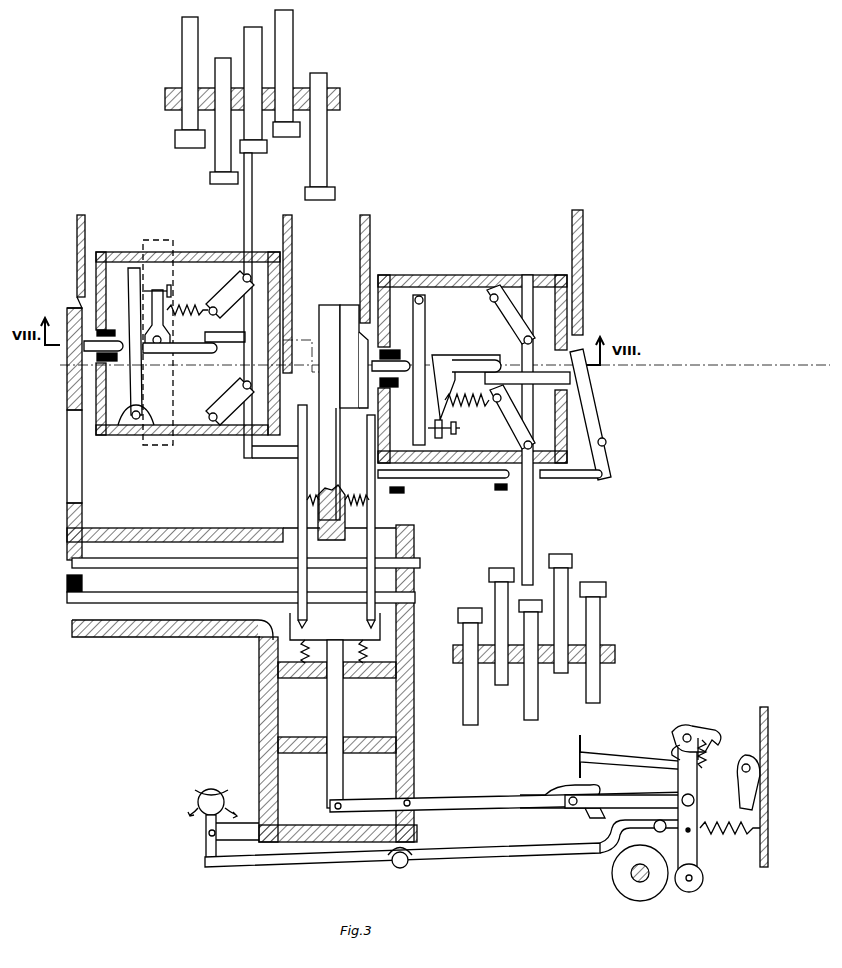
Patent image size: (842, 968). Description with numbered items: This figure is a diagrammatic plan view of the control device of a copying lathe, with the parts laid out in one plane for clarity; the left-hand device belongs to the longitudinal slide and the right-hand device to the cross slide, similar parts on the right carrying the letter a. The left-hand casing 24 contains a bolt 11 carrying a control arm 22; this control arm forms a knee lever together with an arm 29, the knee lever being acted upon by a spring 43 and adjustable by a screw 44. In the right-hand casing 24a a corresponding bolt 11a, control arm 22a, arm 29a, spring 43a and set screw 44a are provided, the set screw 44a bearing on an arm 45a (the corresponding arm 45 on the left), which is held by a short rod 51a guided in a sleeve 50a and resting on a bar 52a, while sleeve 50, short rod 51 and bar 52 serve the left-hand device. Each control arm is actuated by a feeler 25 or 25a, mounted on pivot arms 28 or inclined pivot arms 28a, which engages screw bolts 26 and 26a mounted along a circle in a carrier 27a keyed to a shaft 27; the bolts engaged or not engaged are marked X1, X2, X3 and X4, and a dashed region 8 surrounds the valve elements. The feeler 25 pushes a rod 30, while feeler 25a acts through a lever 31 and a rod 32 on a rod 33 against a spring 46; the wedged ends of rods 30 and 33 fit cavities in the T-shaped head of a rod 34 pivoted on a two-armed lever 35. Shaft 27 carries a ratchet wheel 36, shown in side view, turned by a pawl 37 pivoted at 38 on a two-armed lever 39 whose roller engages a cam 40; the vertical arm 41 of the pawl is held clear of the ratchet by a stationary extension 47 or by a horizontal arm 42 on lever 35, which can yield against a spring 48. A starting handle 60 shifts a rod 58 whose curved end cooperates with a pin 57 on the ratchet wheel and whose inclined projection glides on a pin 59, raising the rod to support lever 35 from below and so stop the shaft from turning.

The valve unit 8 is at (173, 402).
The bolt 11 is at (155, 345).
The pivot pin 11a is at (442, 360).
The control arm 22 is at (180, 350).
The control arm 22a is at (482, 358).
The casing 24 is at (118, 437).
The casing 24a is at (496, 277).
The feeler 25 is at (252, 210).
The feeler 25a is at (533, 490).
The screw bolts 26 is at (286, 130).
The stop pins 26a is at (560, 675).
The shaft 27 is at (696, 800).
The bolt carrier 27a is at (170, 100).
The pivot arms 28 is at (225, 298).
The inclined pivot arm 28a is at (510, 320).
The arm 29 is at (159, 285).
The arm 29a is at (445, 420).
The rod 30 is at (162, 566).
The lever 31 is at (604, 455).
The rod 32 is at (470, 481).
The rod 33 is at (212, 596).
The rod 34 is at (340, 720).
The two-armed lever 35 is at (492, 798).
The ratchet wheel 36 is at (725, 760).
The pawl 37 is at (700, 726).
The pivot 38 is at (688, 726).
The two-armed lever 39 is at (704, 875).
The cam 40 is at (612, 876).
The vertical elongated arm 41 is at (674, 740).
The horizontal arm 42 is at (625, 785).
The spring 43 is at (176, 313).
The spring 43a is at (460, 395).
The screw 44 is at (170, 290).
The set screw 44a is at (452, 432).
The lever 45 is at (133, 268).
The arm 45a is at (419, 370).
The spring 46 is at (376, 505).
The stationary extension 47 is at (588, 756).
The spring 48 is at (588, 815).
The sleeve 50 is at (113, 362).
The sleeve 50a is at (405, 343).
The short rod 51 is at (83, 346).
The short rod 51a is at (400, 383).
The bar 52 is at (78, 302).
The bar 52a is at (335, 315).
The pin 57 is at (652, 828).
The rod 58 is at (550, 848).
The pin 59 is at (392, 862).
The starting handle 60 is at (200, 795).
The bolt position marker X1 is at (250, 40).
The pin X2 is at (220, 160).
The bolt position marker X3 is at (537, 706).
The pin X4 is at (496, 602).